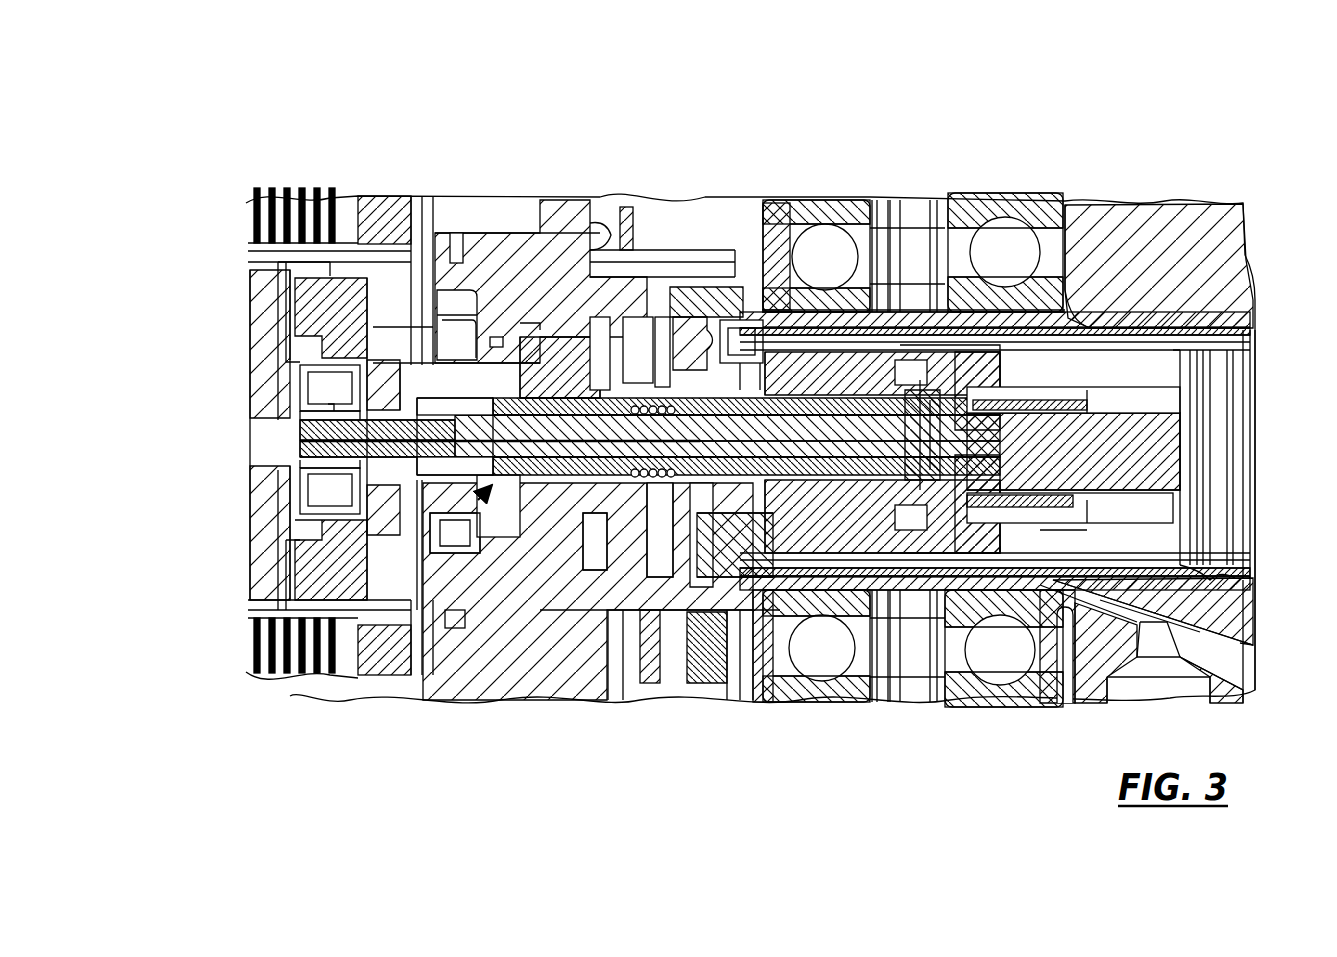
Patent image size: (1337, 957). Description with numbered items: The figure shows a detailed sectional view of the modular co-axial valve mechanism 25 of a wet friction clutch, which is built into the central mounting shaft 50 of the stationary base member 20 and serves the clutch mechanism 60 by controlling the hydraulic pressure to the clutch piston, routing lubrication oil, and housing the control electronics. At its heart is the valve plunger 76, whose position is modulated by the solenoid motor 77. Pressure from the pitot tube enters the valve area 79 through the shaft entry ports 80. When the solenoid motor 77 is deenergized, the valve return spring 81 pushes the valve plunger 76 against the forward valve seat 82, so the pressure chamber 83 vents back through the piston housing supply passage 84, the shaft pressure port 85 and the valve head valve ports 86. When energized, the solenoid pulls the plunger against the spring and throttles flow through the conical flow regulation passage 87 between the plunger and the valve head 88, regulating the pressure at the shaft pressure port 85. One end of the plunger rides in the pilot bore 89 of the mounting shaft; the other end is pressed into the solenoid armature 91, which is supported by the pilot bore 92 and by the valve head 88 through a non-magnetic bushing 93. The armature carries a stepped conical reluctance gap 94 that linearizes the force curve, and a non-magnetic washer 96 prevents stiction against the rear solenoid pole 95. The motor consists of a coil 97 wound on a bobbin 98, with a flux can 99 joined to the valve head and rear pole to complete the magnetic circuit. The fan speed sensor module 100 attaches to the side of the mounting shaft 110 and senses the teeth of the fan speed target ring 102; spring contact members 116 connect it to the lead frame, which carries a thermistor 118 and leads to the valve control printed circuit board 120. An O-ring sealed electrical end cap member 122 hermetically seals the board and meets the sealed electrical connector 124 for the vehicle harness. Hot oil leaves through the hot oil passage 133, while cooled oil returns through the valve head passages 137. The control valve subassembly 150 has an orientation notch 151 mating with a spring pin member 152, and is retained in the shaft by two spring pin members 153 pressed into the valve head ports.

The base member 20 is at (1190, 218).
The modular co-axial valve mechanism 25 is at (803, 128).
The mounting shaft 50 is at (1264, 418).
The clutch mechanism 60 is at (305, 672).
The valve plunger 76 is at (573, 390).
The solenoid motor 77 is at (917, 352).
The valve area 79 is at (640, 495).
The shaft entry ports 80 is at (560, 545).
The valve return spring 81 is at (698, 612).
The forward valve seat 82 is at (612, 492).
The pressure chamber 83 is at (603, 393).
The piston housing supply passage 84 is at (600, 340).
The shaft pressure port 85 is at (627, 345).
The valve head valve ports 86 is at (688, 318).
The conical flow regulation passage 87 is at (650, 612).
The valve head 88 is at (705, 290).
The pilot bore 89 is at (448, 462).
The solenoid armature 91 is at (806, 628).
The pilot bore 92 is at (745, 612).
The non-magnetic bushing 93 is at (775, 622).
The stepped conical reluctance gap 94 is at (850, 620).
The rear solenoid pole 95 is at (910, 622).
The non-magnetic washer 96 is at (882, 620).
The coil 97 is at (832, 330).
The bobbin 98 is at (792, 322).
The flux can 99 is at (872, 340).
The fan speed sensor module 100 is at (332, 378).
The fan speed target ring 102 is at (300, 326).
The mounting shaft 110 is at (430, 455).
The spring contact members 116 is at (312, 426).
The thermistor 118 is at (662, 318).
The valve control printed circuit board 120 is at (948, 600).
The electrical end cap member 122 is at (1010, 600).
The sealed electrical connector 124 is at (1150, 440).
The hot oil passage 133 is at (1200, 618).
The valve head passages 137 is at (747, 322).
The control valve subassembly 150 is at (482, 645).
The orientation notch 151 is at (588, 300).
The spring pin member 152 is at (556, 300).
The spring pin members 153 is at (668, 600).